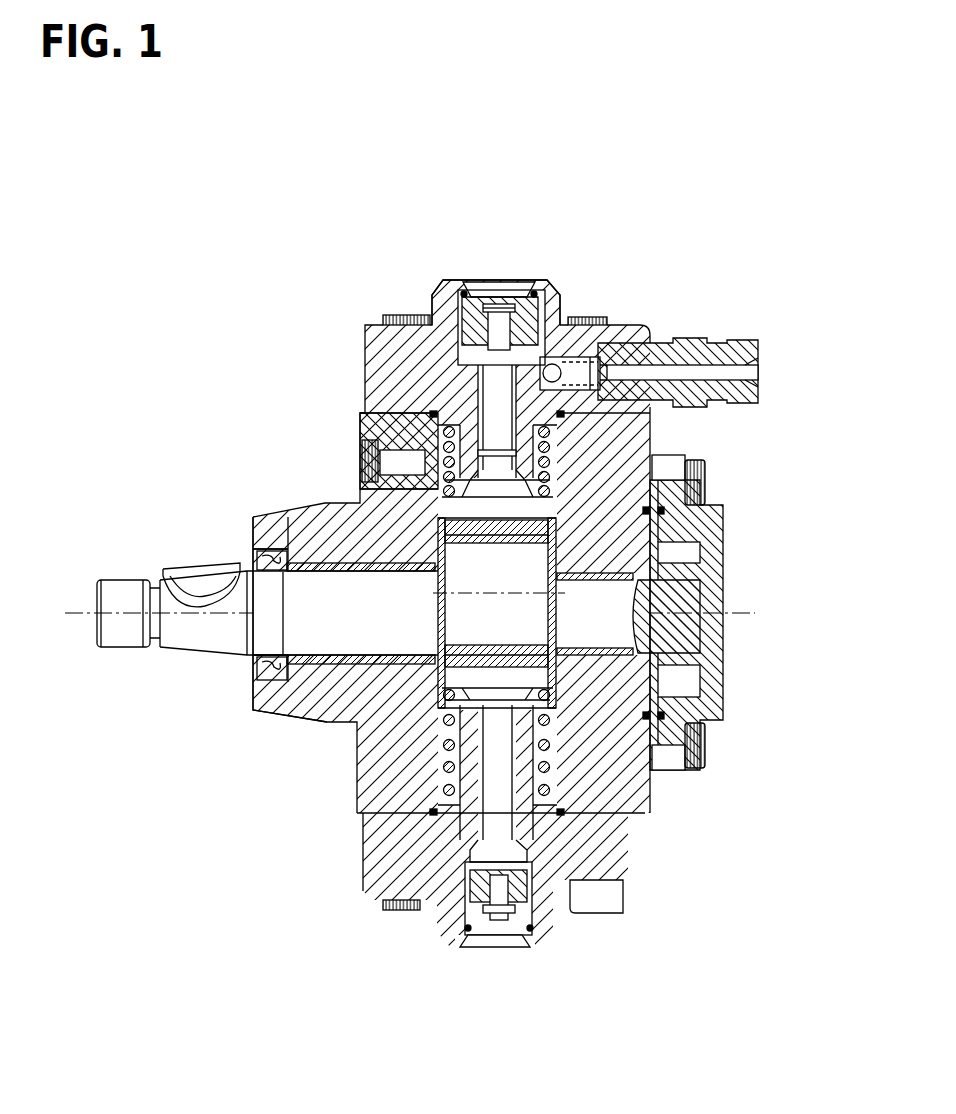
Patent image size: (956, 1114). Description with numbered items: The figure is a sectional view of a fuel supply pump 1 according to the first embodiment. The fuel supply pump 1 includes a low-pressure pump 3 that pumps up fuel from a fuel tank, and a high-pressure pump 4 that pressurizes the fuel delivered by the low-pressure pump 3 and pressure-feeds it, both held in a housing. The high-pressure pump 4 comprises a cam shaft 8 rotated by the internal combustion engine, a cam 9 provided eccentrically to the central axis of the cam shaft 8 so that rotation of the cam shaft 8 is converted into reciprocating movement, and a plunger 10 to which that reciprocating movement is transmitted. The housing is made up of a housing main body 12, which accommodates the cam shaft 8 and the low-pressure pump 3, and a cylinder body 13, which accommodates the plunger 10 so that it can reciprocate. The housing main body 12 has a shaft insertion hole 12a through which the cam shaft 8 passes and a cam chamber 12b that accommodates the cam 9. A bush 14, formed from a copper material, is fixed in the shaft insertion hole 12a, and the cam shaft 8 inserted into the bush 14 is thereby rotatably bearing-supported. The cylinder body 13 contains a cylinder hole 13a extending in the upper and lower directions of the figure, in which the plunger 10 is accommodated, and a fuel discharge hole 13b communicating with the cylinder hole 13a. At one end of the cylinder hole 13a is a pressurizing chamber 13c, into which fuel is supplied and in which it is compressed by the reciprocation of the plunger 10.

The fuel supply pump 1 is at (737, 256).
The low-pressure pump 3 is at (706, 565).
The high-pressure pump 4 is at (540, 323).
The cam shaft 8 is at (351, 647).
The cam 9 is at (535, 555).
The plunger 10 is at (507, 448).
The housing main body 12 is at (313, 518).
The shaft insertion hole 12a is at (330, 570).
The cam chamber 12b is at (395, 436).
The cylinder body 13 is at (433, 298).
The cylinder hole 13a is at (480, 397).
The fuel discharge hole 13b is at (607, 318).
The pressurizing chamber 13c is at (517, 305).
The bush 14 is at (312, 665).